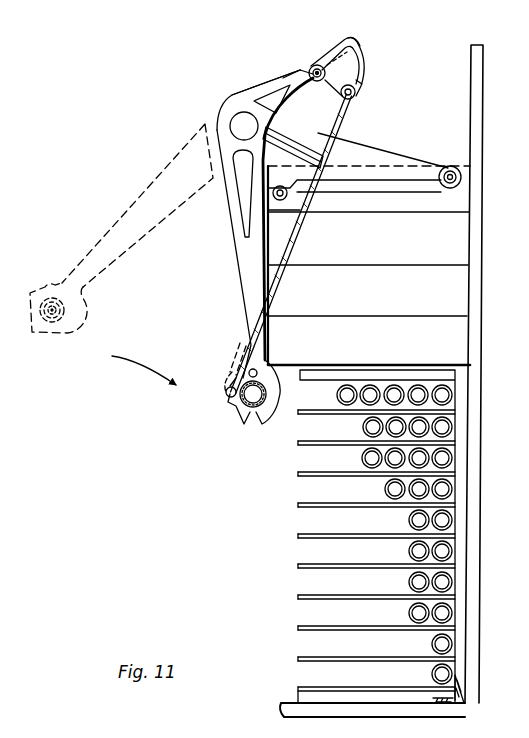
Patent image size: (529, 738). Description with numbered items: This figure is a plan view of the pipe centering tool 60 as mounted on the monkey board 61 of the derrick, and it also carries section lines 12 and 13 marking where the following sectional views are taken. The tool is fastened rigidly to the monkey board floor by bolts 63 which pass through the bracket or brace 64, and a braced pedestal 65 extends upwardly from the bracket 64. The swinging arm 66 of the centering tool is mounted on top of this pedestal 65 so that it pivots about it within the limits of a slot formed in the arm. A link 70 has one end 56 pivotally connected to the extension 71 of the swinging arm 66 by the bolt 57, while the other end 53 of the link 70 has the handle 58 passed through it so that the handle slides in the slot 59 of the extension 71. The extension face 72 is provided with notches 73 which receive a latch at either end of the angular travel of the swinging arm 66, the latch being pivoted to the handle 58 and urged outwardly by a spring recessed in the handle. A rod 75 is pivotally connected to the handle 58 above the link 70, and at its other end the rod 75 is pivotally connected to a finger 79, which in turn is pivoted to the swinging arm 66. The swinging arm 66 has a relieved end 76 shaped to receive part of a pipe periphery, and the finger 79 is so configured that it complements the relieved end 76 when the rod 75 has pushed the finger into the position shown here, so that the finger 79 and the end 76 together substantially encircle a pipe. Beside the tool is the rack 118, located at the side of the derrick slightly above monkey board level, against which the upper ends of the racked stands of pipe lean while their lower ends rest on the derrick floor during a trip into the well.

The section line 12— 12 is at (292, 66).
The section line 13— 13 is at (285, 365).
The other end of the link 53 is at (338, 117).
The end of the link 56 is at (311, 75).
The bolt 57 is at (312, 71).
The handle 58 is at (356, 99).
The slot 59 is at (357, 80).
The pipe centering tool 60 is at (256, 247).
The monkey board 61 is at (468, 248).
The bolts 63 is at (452, 167).
The bracket or brace 64 is at (377, 173).
The braced pedestal 65 is at (303, 143).
The swinging arm 66 is at (243, 240).
The link 70 is at (355, 53).
The extension 71 is at (283, 78).
The extension face 72 is at (365, 64).
The notches 73 is at (352, 54).
The rod 75 is at (278, 291).
The relieved end 76 is at (268, 408).
The finger 79 is at (236, 410).
The rack 118 is at (307, 509).